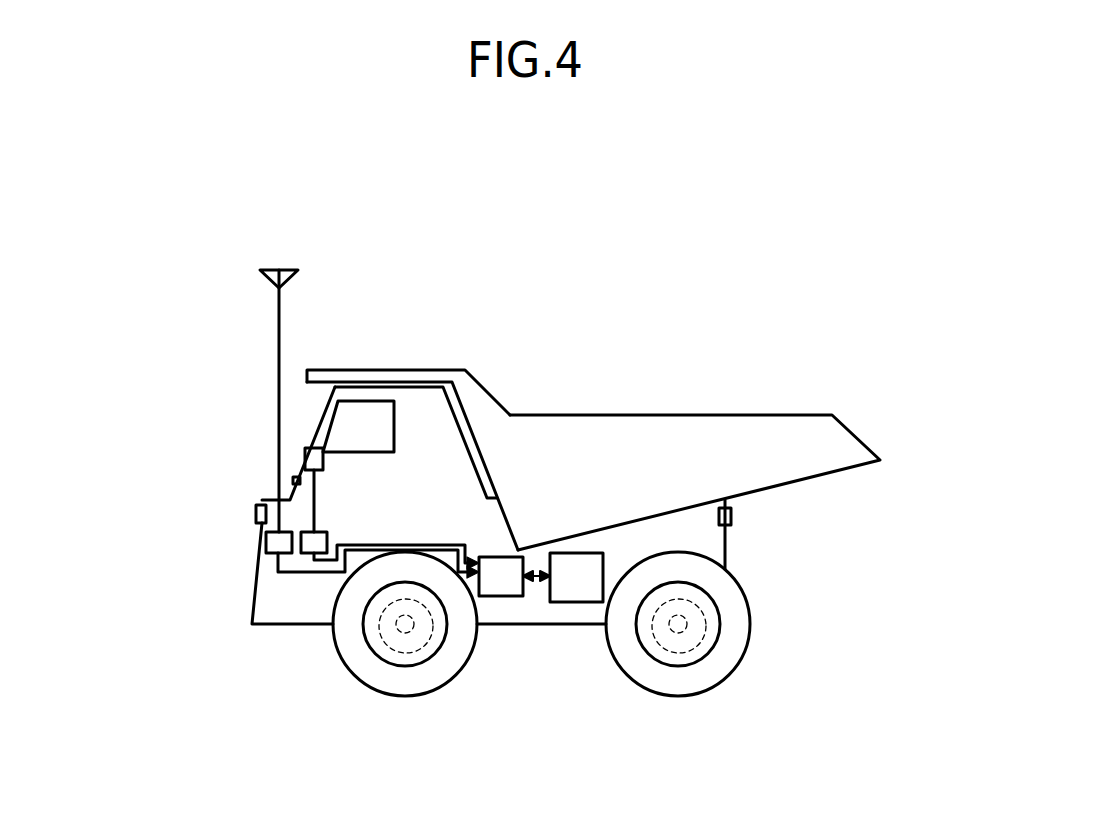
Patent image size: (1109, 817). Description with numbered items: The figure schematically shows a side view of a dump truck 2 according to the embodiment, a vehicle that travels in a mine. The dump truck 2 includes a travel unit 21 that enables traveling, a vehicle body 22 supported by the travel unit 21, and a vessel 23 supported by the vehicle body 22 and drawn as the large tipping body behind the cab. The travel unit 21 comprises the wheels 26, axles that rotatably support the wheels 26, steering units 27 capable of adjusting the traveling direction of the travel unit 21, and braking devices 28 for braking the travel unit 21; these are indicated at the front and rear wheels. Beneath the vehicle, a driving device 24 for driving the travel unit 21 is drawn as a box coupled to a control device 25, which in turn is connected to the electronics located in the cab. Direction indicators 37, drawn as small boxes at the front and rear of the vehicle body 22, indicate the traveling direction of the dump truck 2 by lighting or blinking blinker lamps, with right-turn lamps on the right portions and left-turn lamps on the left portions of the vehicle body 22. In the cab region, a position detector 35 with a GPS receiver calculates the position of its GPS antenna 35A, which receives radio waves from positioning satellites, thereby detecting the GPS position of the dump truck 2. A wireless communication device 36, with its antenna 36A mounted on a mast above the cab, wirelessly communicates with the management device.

The dump truck 2 is at (722, 235).
The travel unit 21 is at (758, 599).
The vehicle body 22 is at (736, 545).
The vessel 23 is at (572, 415).
The driving device 24 is at (575, 602).
The control device 25 is at (500, 597).
The wheels 26 is at (412, 696).
The steering units 27 is at (427, 637).
The braking devices 28 is at (385, 658).
The position detector 35 is at (328, 540).
The GPS antenna 35A is at (305, 448).
The wireless communication device 36 is at (265, 541).
The antenna 36A is at (282, 269).
The direction indicators 37 is at (255, 513).